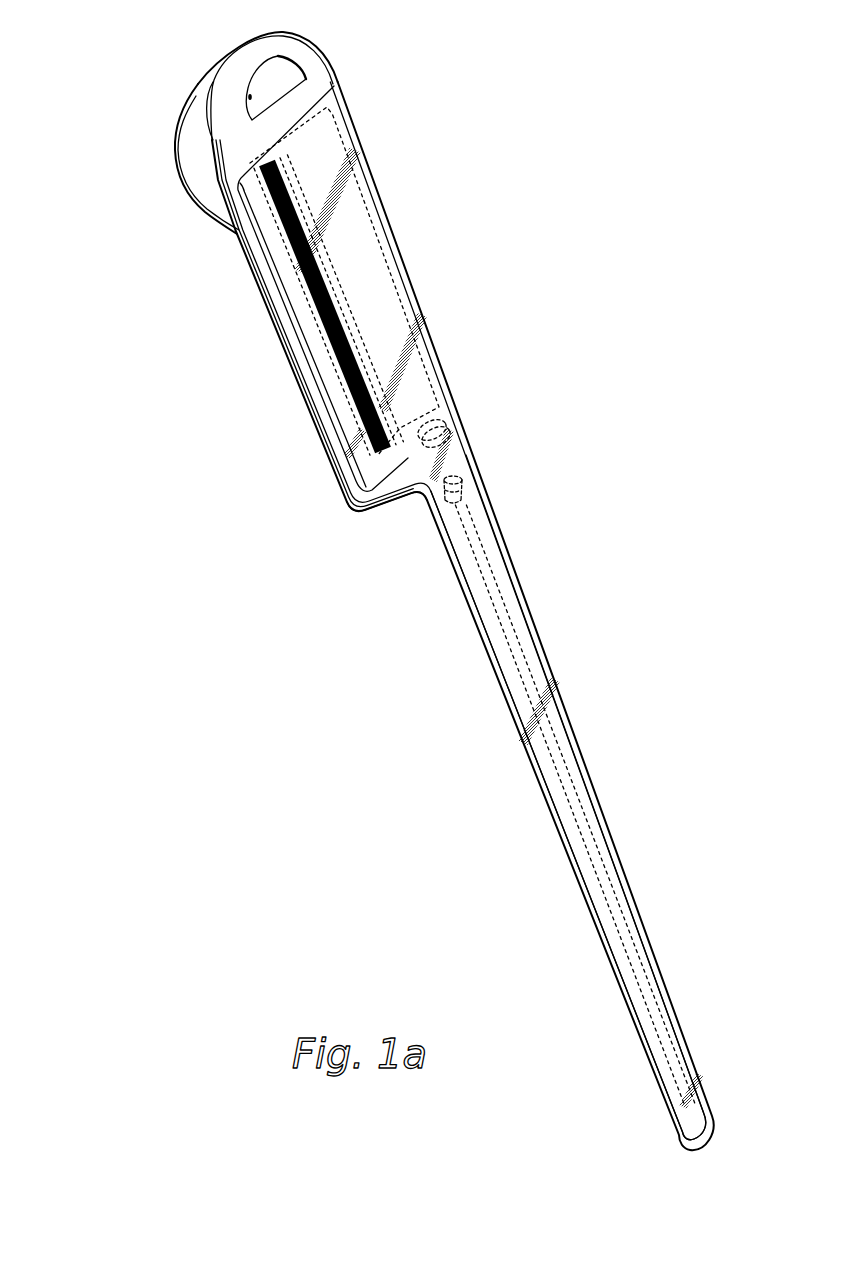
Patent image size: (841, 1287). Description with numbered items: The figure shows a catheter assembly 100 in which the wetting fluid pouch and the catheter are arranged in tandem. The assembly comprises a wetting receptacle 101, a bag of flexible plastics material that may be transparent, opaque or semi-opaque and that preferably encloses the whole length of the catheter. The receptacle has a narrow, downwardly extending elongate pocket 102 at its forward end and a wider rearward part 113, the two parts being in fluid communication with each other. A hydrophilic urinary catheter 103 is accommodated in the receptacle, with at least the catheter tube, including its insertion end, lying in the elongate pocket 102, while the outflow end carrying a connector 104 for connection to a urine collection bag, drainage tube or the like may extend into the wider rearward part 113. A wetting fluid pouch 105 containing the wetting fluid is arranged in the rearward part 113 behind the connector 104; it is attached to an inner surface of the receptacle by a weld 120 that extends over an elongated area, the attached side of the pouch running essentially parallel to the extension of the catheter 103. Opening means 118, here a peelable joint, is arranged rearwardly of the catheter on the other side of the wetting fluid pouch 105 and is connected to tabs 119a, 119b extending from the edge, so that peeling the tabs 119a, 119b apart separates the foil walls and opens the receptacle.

The catheter assembly 100 is at (473, 703).
The wetting receptacle 101 is at (420, 472).
The elongate pocket 102 is at (633, 1000).
The hydrophilic urinary catheter 103 is at (573, 797).
The connector 104 is at (440, 452).
The wetting fluid pouch 105 is at (354, 303).
The wider rearward part 113 is at (407, 460).
The opening means 118 is at (217, 177).
The tab 119a is at (278, 56).
The tab 119b is at (190, 147).
The weld 120 is at (352, 381).